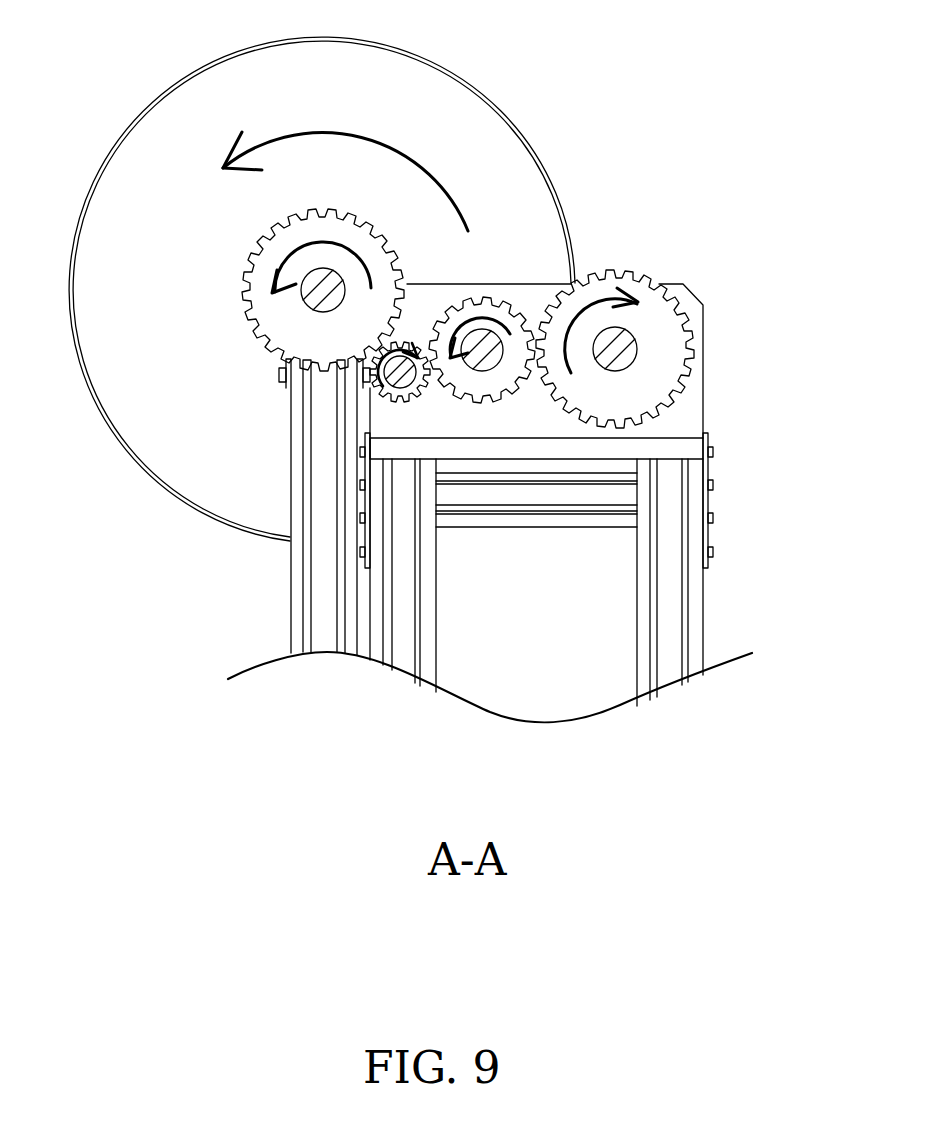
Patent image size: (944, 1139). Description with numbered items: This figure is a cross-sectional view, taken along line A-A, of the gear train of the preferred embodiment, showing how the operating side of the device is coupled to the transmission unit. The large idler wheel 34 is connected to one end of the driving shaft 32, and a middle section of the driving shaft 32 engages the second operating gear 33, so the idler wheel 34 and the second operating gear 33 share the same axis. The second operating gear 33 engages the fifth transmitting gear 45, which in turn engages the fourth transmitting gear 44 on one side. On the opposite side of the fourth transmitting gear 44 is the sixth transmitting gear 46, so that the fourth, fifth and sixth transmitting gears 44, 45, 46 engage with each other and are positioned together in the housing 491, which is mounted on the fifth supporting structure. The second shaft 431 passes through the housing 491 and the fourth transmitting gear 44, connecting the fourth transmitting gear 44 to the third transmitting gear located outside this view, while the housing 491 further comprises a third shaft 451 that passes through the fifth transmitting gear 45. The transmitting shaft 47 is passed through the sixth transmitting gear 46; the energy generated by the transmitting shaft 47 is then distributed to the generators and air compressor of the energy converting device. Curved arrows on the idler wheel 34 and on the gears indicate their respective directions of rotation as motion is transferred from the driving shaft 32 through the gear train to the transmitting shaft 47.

The idler wheel 34 is at (467, 113).
The second operating gear 33 is at (257, 254).
The driving shaft 32 is at (309, 302).
The fourth transmitting gear 44 is at (517, 310).
The second shaft 431 is at (488, 363).
The fifth transmitting gear 45 is at (395, 390).
The third shaft 451 is at (410, 382).
The sixth transmitting gear 46 is at (673, 362).
The transmitting shaft 47 is at (630, 343).
The housing 491 is at (683, 413).